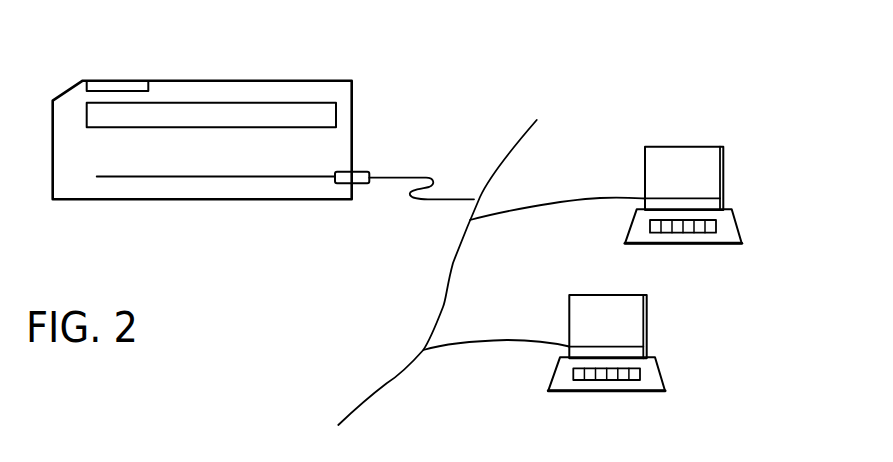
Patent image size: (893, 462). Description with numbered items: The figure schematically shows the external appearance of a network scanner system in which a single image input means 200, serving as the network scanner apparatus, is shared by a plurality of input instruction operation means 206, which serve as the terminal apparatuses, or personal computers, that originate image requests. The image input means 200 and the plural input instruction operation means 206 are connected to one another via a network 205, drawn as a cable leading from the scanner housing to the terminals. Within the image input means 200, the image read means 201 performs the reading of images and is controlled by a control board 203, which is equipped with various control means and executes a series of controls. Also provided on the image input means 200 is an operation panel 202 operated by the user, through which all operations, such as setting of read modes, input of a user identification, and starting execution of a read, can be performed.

The image input means 200 is at (352, 97).
The image read means 201 is at (255, 102).
The operation panel 202 is at (117, 78).
The control board 203 is at (156, 177).
The network 205 is at (418, 203).
The input instruction operation means 206 is at (723, 170).